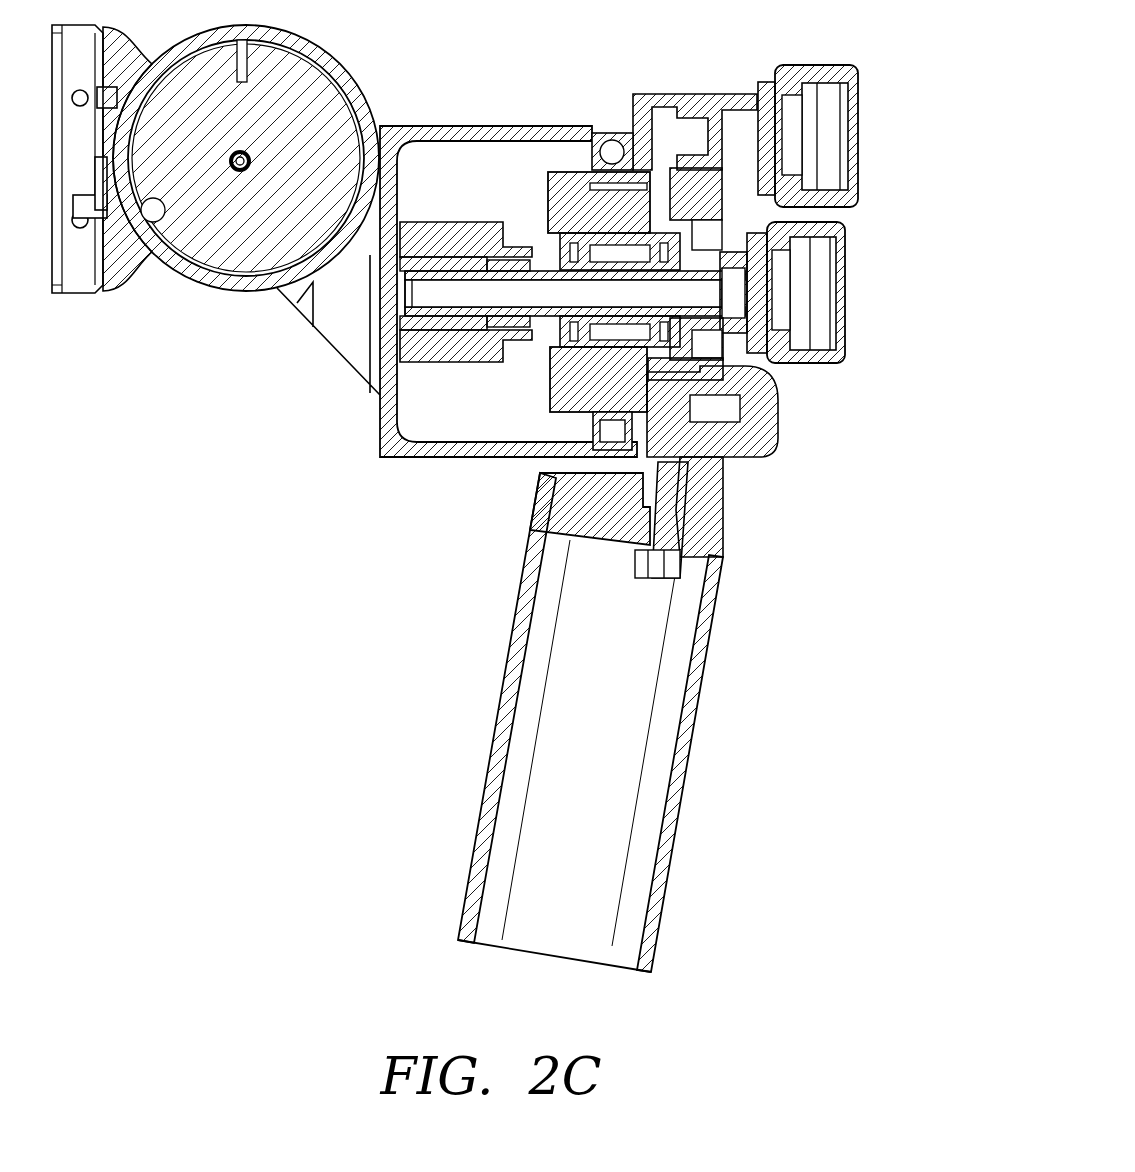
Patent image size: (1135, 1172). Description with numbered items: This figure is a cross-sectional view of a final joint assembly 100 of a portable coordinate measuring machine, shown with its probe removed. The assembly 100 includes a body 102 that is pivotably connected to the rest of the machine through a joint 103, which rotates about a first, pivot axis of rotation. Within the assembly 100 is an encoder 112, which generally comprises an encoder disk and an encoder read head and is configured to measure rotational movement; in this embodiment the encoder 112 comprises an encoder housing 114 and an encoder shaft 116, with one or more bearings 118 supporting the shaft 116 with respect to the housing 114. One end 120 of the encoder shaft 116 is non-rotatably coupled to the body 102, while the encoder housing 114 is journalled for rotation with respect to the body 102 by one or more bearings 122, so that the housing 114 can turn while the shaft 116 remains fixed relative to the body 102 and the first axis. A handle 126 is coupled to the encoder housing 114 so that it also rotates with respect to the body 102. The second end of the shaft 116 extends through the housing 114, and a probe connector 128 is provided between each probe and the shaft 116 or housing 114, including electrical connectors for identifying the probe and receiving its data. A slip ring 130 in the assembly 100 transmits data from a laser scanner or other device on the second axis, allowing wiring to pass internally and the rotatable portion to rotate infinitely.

The final joint assembly 100 is at (496, 496).
The body 102 is at (513, 460).
The joint 103 is at (203, 310).
The encoder 112 is at (503, 412).
The encoder housing 114 is at (563, 173).
The encoder shaft 116 is at (503, 263).
The bearings 118 is at (597, 428).
The end of the encoder shaft 120 is at (393, 358).
The bearings 122 is at (607, 127).
The handle 126 is at (500, 692).
The probe connector 128 is at (860, 72).
The slip ring 130 is at (425, 210).